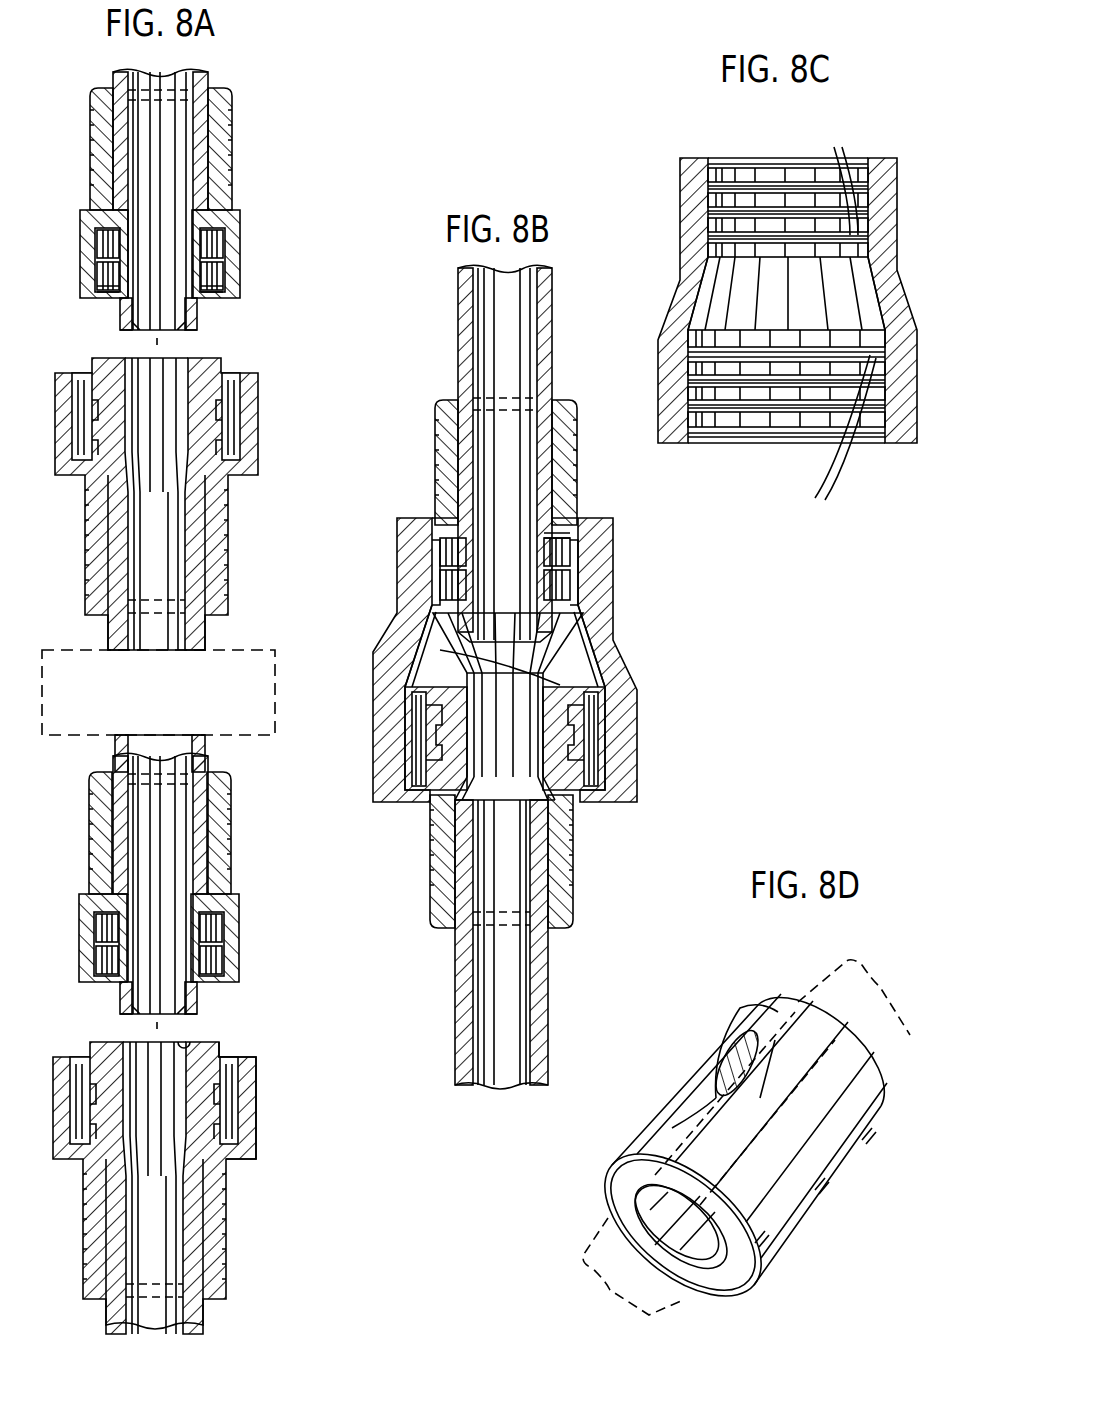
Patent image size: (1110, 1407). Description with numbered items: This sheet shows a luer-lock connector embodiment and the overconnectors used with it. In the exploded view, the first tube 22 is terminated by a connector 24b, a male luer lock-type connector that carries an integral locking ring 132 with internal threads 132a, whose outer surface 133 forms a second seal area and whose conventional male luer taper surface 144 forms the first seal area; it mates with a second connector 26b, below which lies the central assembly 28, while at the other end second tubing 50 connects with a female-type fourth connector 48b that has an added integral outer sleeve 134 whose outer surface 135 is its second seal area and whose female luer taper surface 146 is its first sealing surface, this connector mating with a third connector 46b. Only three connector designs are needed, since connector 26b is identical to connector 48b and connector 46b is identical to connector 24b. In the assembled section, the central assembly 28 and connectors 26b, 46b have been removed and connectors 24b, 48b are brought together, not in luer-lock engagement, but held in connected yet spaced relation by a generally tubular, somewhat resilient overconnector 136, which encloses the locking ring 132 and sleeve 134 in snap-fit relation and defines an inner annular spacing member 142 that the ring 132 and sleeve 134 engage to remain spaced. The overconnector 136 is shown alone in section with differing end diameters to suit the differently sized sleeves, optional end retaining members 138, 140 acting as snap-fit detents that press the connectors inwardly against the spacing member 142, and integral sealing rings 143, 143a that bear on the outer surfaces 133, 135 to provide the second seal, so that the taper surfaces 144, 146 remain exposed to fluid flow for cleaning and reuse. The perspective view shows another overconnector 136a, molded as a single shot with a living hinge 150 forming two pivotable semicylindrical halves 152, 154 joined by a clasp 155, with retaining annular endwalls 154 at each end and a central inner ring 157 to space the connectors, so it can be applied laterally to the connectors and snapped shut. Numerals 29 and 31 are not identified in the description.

In FIG. 8A, the first tube 22 is at (212, 78).
In FIG. 8B, the first tube 22 is at (460, 345).
In FIG. 8A, the connector 24b is at (237, 220).
In FIG. 8B, the connector 24b is at (579, 440).
In FIG. 8A, the outer surface of sleeve 133 is at (242, 240).
In FIG. 8B, the outer surface of sleeve 133 is at (613, 530).
In FIG. 8A, the locking ring 132 is at (238, 262).
In FIG. 8B, the locking ring 132 is at (432, 548).
In FIG. 8A, the internal threads 132a is at (215, 303).
In FIG. 8B, the internal threads 132a is at (605, 522).
In FIG. 8A, the male luer taper surface 144 is at (98, 298).
In FIG. 8B, the male luer taper surface 144 is at (592, 585).
In FIG. 8A, the connector 26b is at (230, 540).
In FIG. 8A, the tube end 29 is at (206, 640).
In FIG. 8A, the central assembly 28 is at (280, 663).
In FIG. 8A, the tube 31 is at (207, 752).
In FIG. 8A, the connector 46b is at (233, 826).
In FIG. 8A, the female luer taper surface 146 is at (186, 1046).
In FIG. 8B, the female luer taper surface 146 is at (545, 712).
In FIG. 8A, the sleeve 134 is at (252, 1085).
In FIG. 8B, the sleeve 134 is at (410, 740).
In FIG. 8A, the outer surface of sleeve 135 is at (258, 1118).
In FIG. 8B, the outer surface of sleeve 135 is at (612, 752).
In FIG. 8A, the fourth connector 48b is at (206, 1178).
In FIG. 8B, the fourth connector 48b is at (578, 862).
In FIG. 8A, the second tubing 50 is at (200, 1320).
In FIG. 8B, the second tubing 50 is at (457, 992).
In FIG. 8B, the overconnector 136 is at (394, 571).
In FIG. 8C, the overconnector 136 is at (682, 232).
In FIG. 8B, the inner annular spacing member 142 is at (402, 652).
In FIG. 8C, the inner annular spacing member 142 is at (722, 292).
In FIG. 8C, the end retaining member 138 is at (858, 166).
In FIG. 8C, the end retaining member 140 is at (870, 444).
In FIG. 8D, the end retaining member 140 is at (630, 1172).
In FIG. 8C, the sealing ring 143 is at (829, 175).
In FIG. 8C, the sealing ring 143a is at (836, 443).
In FIG. 8D, the overconnector 136a is at (752, 1005).
In FIG. 8D, the living hinge 150 is at (716, 1060).
In FIG. 8D, the semicylindrical half 152 is at (762, 1235).
In FIG. 8D, the semicylindrical half 154 is at (798, 1002).
In FIG. 8D, the clasp 155 is at (822, 1180).
In FIG. 8D, the central inner ring 157 is at (868, 1133).